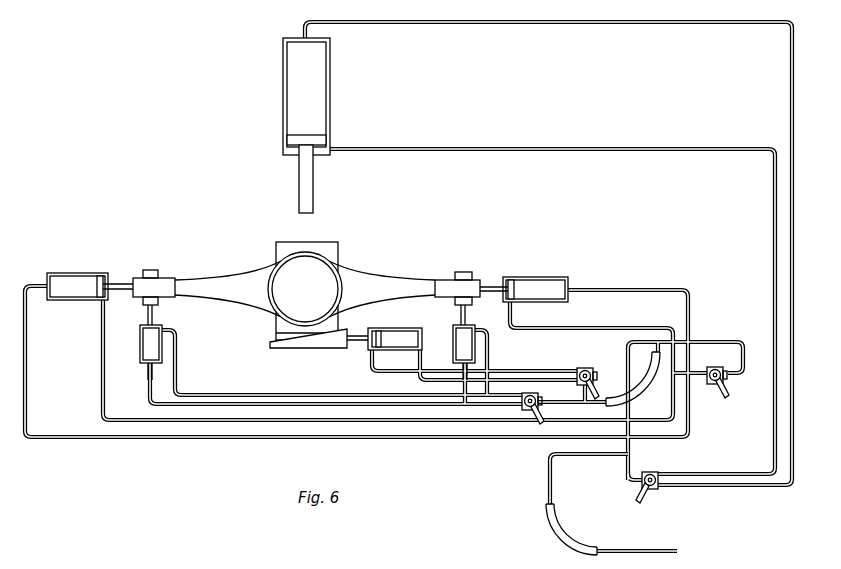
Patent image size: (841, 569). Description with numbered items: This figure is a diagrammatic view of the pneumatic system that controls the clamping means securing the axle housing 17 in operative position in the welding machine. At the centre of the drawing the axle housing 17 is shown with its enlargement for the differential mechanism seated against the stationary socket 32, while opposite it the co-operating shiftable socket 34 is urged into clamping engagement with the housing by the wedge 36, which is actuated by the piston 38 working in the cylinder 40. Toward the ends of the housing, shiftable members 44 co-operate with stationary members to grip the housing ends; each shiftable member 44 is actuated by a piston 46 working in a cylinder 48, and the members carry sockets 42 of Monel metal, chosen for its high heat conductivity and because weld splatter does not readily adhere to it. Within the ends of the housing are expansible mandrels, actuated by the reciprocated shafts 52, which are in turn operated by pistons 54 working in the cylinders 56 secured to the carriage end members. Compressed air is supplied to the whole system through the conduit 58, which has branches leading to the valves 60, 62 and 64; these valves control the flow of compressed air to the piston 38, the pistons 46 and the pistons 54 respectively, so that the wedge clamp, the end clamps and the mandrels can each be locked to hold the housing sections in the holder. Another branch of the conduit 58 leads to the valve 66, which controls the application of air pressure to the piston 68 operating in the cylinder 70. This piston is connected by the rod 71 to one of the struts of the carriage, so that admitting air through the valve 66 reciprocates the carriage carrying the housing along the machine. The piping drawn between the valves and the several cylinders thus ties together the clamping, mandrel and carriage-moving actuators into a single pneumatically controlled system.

The axle housing 17 is at (365, 273).
The stationary socket 32 is at (333, 243).
The shiftable socket 34 is at (272, 338).
The wedge 36 is at (311, 347).
The piston 38 is at (378, 331).
The cylinder 40 is at (412, 329).
The socket 42 is at (155, 272).
The shiftable member 44 is at (157, 302).
The piston 46 is at (141, 334).
The cylinder 48 is at (145, 370).
The reciprocated shaft 52 is at (118, 285).
The piston 54 is at (100, 275).
The cylinder 56 is at (55, 274).
The conduit 58 is at (640, 551).
The valve 60 is at (585, 368).
The valve 62 is at (530, 412).
The valve 64 is at (718, 388).
The valve 66 is at (655, 490).
The piston 68 is at (330, 130).
The cylinder 70 is at (330, 76).
The rod 71 is at (313, 190).